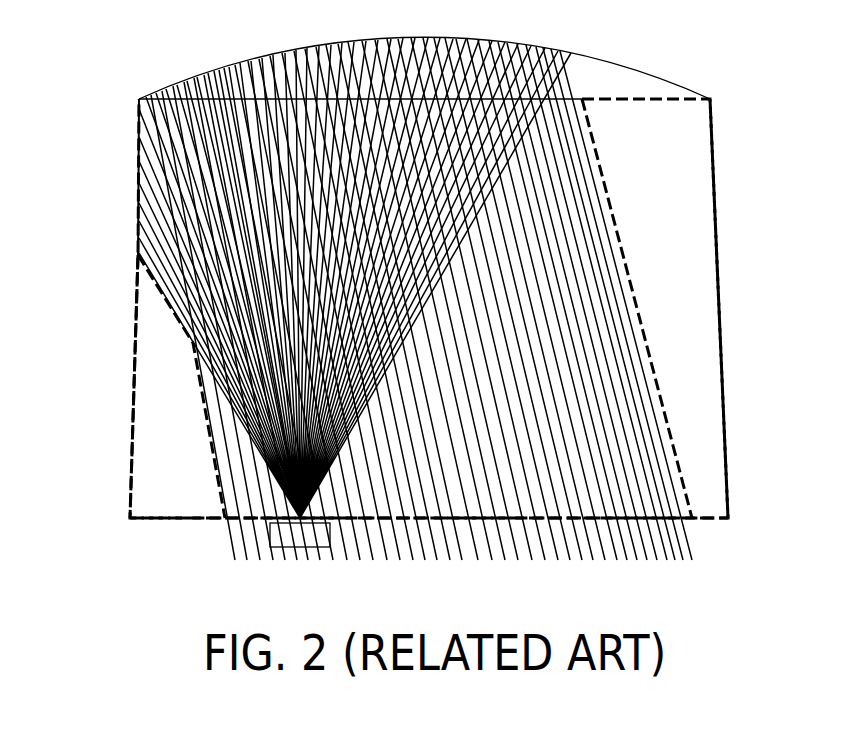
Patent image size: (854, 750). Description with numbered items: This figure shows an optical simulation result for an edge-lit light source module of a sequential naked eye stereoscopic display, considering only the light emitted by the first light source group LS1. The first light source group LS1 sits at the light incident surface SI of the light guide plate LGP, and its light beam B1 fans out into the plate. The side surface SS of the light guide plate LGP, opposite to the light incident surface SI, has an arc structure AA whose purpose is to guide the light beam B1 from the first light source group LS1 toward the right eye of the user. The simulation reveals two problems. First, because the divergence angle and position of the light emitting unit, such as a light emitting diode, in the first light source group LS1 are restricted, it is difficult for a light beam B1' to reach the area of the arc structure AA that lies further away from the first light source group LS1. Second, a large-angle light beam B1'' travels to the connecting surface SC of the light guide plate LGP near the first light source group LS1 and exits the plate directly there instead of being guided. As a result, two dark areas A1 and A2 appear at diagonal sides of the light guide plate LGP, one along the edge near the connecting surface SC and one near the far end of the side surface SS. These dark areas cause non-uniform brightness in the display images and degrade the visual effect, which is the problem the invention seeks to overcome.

The light guide plate LGP is at (745, 336).
The arc structure AA is at (643, 85).
The connecting surface SC is at (100, 174).
The dark area A1 is at (135, 392).
The dark area A2 is at (745, 272).
The light incident surface SI is at (747, 543).
The side surface SS is at (608, 36).
The first light source group LS1 is at (320, 583).
The light beam B1 is at (354, 310).
The light beam B1' is at (421, 281).
The large-angle light beam B1'' is at (179, 313).